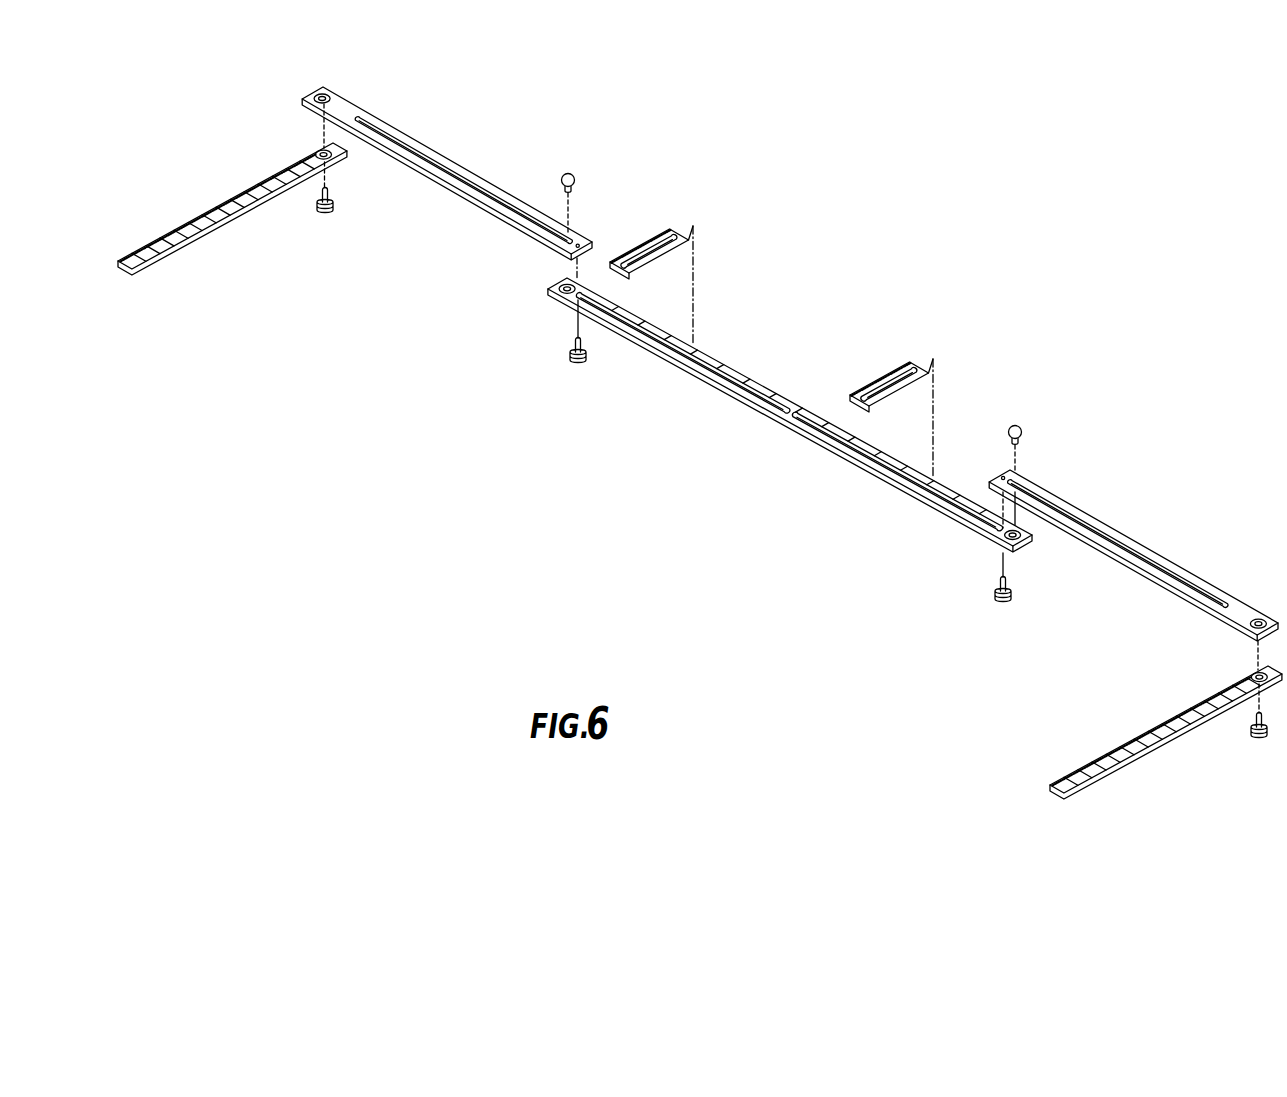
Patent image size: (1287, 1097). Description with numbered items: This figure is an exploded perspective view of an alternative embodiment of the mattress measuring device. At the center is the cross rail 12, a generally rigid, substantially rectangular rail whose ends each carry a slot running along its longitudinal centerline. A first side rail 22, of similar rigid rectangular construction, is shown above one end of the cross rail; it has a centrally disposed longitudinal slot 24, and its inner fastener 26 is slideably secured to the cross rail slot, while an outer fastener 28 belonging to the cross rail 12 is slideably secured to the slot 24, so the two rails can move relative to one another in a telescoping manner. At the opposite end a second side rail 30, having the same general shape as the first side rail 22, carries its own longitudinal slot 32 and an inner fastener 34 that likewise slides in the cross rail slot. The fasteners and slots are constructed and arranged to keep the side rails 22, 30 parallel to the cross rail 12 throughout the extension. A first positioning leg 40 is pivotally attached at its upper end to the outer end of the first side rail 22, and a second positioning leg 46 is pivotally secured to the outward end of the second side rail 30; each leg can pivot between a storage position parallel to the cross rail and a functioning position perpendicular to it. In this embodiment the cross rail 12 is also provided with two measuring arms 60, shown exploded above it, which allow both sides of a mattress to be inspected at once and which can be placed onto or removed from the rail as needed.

The cross rail 12 is at (760, 380).
The first side rail 22 is at (447, 155).
The first side rail slot 24 is at (433, 167).
The inner fastener 26 is at (570, 353).
The outer fastener 28 is at (568, 178).
The second side rail 30 is at (1133, 555).
The second side rail slot 32 is at (1112, 540).
The inner fastener 34 is at (995, 592).
The first positioning leg 40 is at (213, 207).
The second positioning leg 46 is at (1135, 768).
The measuring arm 60 is at (662, 228).